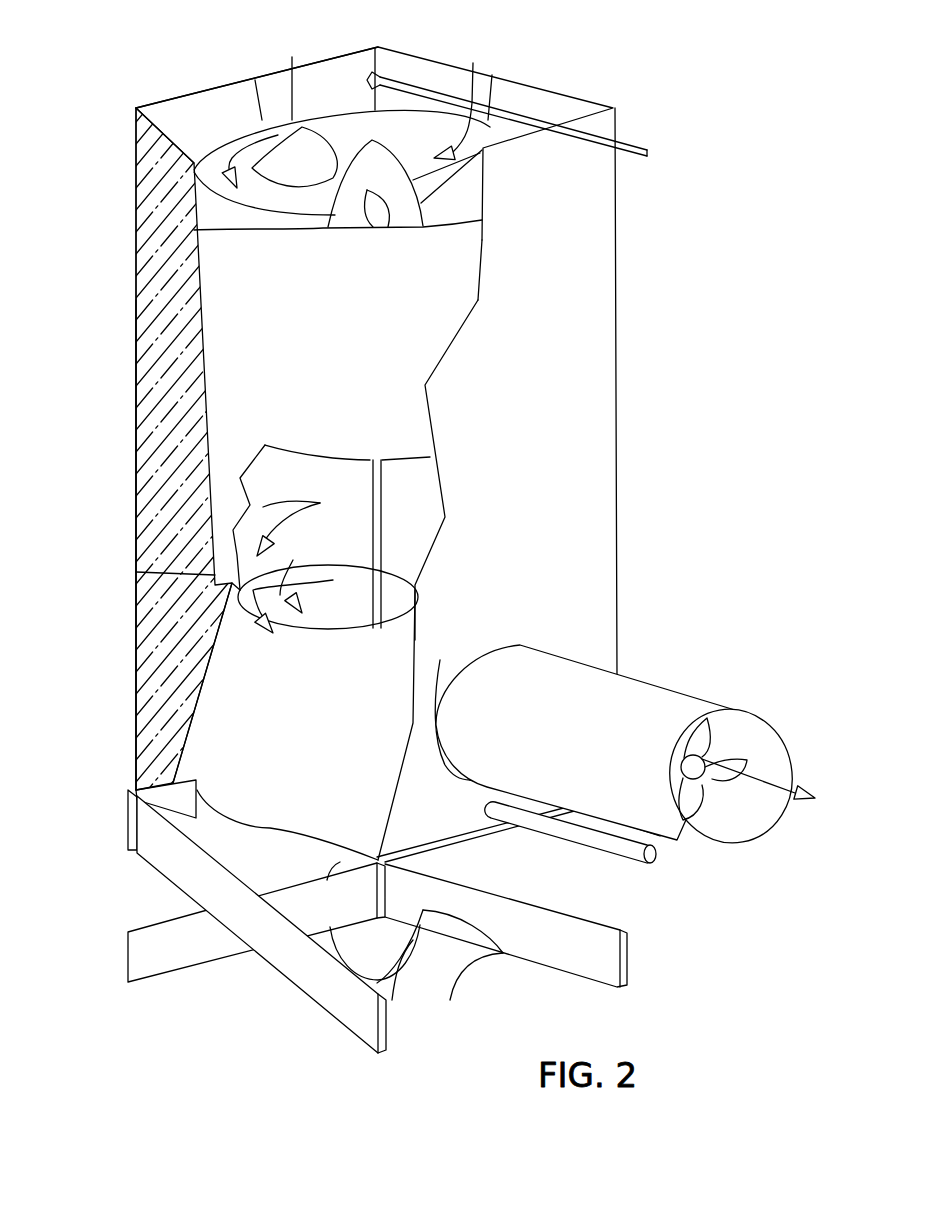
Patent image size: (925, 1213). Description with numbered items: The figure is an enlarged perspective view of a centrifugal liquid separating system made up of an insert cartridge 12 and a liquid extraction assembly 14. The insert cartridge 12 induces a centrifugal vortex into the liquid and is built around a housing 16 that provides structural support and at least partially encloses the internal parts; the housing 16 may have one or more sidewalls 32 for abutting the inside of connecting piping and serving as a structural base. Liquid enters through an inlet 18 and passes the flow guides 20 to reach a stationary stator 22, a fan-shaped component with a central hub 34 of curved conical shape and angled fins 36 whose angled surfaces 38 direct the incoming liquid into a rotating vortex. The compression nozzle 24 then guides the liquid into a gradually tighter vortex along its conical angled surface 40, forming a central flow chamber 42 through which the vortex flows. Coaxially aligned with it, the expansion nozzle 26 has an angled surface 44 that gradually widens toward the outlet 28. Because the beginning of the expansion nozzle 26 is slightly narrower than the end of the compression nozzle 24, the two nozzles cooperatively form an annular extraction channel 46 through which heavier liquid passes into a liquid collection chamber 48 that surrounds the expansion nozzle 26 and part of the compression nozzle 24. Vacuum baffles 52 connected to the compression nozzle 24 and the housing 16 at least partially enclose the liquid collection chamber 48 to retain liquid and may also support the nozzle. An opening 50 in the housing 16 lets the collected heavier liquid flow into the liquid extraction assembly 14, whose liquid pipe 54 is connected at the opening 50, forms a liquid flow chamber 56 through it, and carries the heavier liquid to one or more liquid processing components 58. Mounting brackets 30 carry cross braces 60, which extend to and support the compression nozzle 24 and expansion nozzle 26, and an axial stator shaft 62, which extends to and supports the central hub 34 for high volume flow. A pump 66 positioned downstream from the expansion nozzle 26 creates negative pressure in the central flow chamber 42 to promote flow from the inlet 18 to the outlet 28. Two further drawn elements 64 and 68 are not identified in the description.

The insert cartridge 12 is at (411, 395).
The liquid extraction assembly 14 is at (764, 620).
The housing 16 is at (57, 411).
The inlet 18 is at (306, 89).
The flow guides 20 is at (192, 110).
The stator 22 is at (436, 82).
The compression nozzle 24 is at (155, 446).
The expansion nozzle 26 is at (132, 754).
The outlet 28 is at (258, 908).
The mounting brackets 30 is at (128, 800).
The sidewalls 32 is at (136, 482).
The central hub 34 is at (362, 137).
The fins 36 is at (206, 192).
The angled surfaces 38 is at (307, 198).
The conical angled surface 40 is at (243, 513).
The central flow chamber 42 is at (550, 470).
The angled surface 44 is at (415, 612).
The annular extraction channel 46 is at (269, 721).
The liquid collection chamber 48 is at (116, 612).
The opening 50 is at (585, 704).
The vacuum baffles 52 is at (143, 571).
The liquid pipe 54 is at (635, 680).
The liquid flow chamber 56 is at (754, 752).
The liquid processing components 58 is at (752, 802).
The cross braces 60 is at (230, 924).
The axial stator shaft 62 is at (385, 548).
The rod 64 is at (440, 80).
The pump 66 is at (457, 968).
The support rod 68 is at (604, 854).